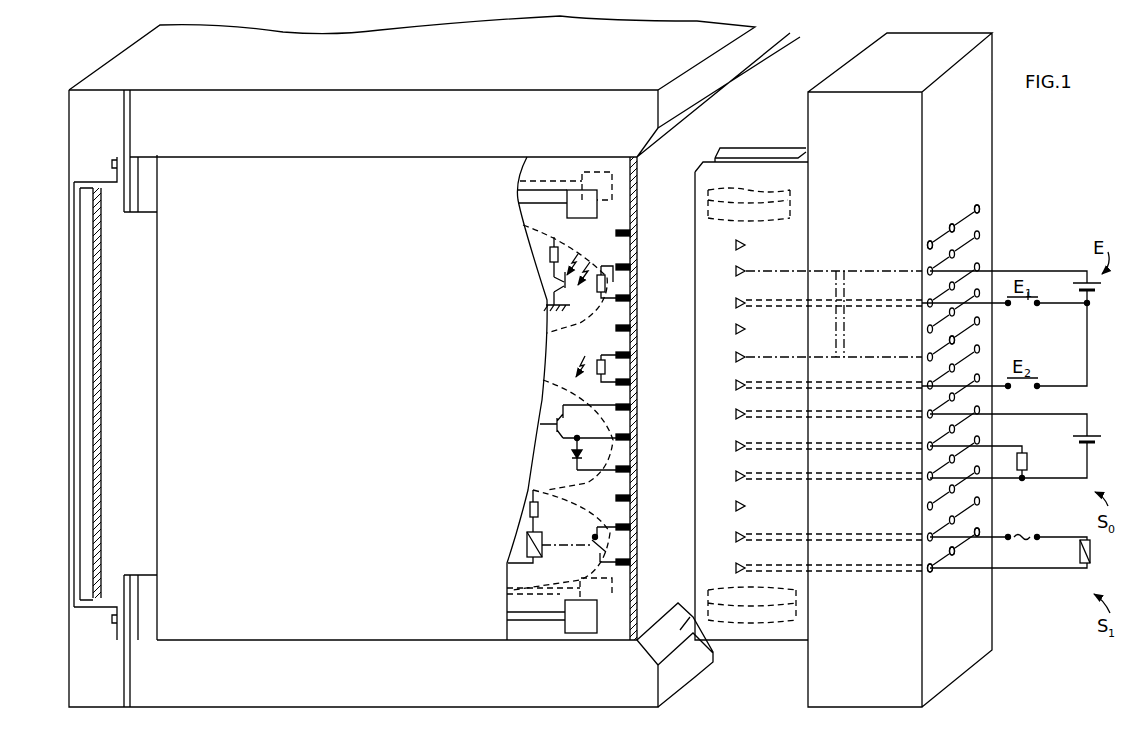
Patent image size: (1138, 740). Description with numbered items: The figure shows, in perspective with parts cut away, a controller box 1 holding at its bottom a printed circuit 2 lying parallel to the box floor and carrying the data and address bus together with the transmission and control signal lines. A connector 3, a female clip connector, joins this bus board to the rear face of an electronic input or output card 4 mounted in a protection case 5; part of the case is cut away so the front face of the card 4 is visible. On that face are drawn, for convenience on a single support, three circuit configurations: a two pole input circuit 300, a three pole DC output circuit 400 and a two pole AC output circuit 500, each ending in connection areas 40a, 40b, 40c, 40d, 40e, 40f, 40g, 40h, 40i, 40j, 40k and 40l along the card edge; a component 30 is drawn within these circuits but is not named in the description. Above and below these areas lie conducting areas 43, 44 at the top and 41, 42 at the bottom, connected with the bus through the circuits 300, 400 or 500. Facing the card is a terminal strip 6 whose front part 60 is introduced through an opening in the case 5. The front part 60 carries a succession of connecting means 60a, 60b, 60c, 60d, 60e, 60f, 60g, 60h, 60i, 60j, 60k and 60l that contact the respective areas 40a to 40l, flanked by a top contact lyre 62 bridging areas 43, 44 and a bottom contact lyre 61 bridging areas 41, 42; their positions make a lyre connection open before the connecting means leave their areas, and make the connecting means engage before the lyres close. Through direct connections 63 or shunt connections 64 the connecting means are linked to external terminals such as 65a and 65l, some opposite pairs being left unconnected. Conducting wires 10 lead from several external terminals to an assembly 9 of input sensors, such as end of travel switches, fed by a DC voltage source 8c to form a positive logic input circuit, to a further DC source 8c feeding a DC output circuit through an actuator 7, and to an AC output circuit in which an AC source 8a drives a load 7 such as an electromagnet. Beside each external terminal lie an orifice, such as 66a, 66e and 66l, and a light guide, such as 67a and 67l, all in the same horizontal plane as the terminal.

The controller box 1 is at (384, 706).
The printed circuit 2 is at (102, 470).
The connector 3 is at (128, 540).
The electronic input or output card 4 is at (147, 199).
The protection case 5 is at (260, 613).
The terminal strip 6 is at (880, 688).
The actuator 7 is at (1030, 460).
The switch 8a is at (1032, 536).
The DC voltage source 8c is at (1101, 293).
The assembly of input sensors 9 is at (1039, 377).
The conducting wires 10 is at (995, 301).
The resistor 30 is at (598, 358).
The connection area 40a is at (637, 233).
The connection area 40b is at (637, 267).
The connection area 40c is at (637, 298).
The connection area 40d is at (637, 328).
The connection area 40e is at (637, 355).
The connection area 40f is at (637, 382).
The connection area 40g is at (637, 407).
The connection area 40h is at (637, 437).
The connection area 40i is at (637, 469).
The connection area 40j is at (637, 498).
The connection area 40k is at (637, 527).
The connection area 40l is at (637, 562).
The conducting area 41 is at (580, 634).
The conducting area 42 is at (606, 605).
The conducting area 43 is at (578, 205).
The conducting area 44 is at (600, 180).
The front part of terminal strip 60 is at (765, 145).
The connecting means 60a is at (719, 244).
The connecting means 60b is at (807, 270).
The connecting means 60c is at (807, 302).
The connecting means 60d is at (719, 328).
The connecting means 60e is at (807, 356).
The connecting means 60f is at (807, 384).
The connecting means 60g is at (807, 413).
The connecting means 60h is at (807, 445).
The connecting means 60i is at (807, 475).
The connecting means 60j is at (719, 505).
The connecting means 60k is at (807, 536).
The connecting means 60l is at (807, 567).
The bottom contact lyre 61 is at (782, 612).
The top contact lyre 62 is at (790, 207).
The direct electrical connection 63 is at (870, 573).
The shunt electrical connection 64 is at (884, 272).
The external connection terminal 65a is at (930, 241).
The external connection terminal 65l is at (928, 574).
The orifice 66a is at (953, 224).
The orifice 66e is at (947, 341).
The orifice 66l is at (953, 557).
The light guide 67a is at (981, 210).
The light guide 67l is at (978, 537).
The two pole input board circuit 300 is at (544, 284).
The three pole DC output board circuit 400 is at (558, 451).
The two pole AC output board circuit 500 is at (523, 541).